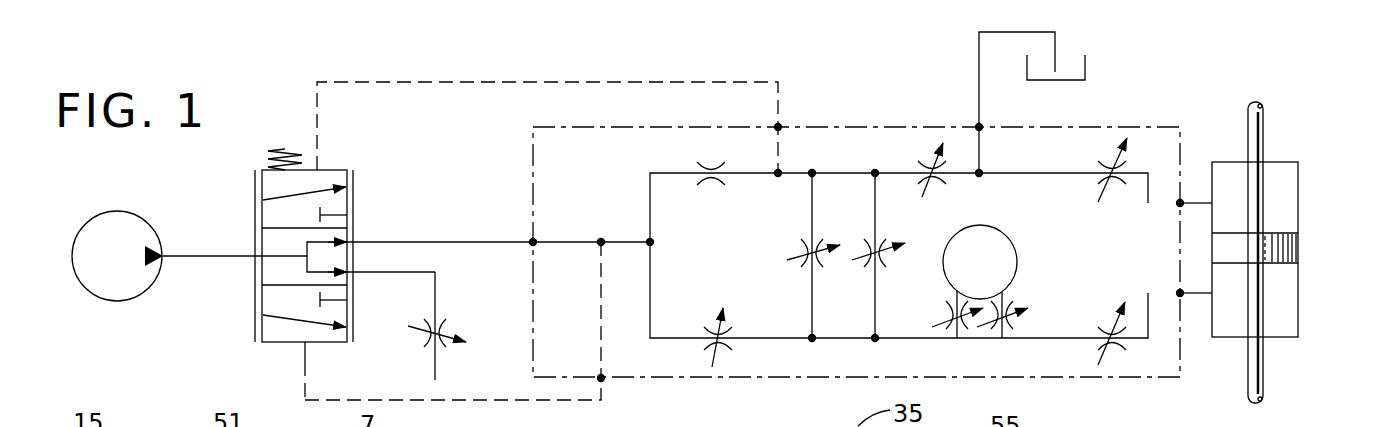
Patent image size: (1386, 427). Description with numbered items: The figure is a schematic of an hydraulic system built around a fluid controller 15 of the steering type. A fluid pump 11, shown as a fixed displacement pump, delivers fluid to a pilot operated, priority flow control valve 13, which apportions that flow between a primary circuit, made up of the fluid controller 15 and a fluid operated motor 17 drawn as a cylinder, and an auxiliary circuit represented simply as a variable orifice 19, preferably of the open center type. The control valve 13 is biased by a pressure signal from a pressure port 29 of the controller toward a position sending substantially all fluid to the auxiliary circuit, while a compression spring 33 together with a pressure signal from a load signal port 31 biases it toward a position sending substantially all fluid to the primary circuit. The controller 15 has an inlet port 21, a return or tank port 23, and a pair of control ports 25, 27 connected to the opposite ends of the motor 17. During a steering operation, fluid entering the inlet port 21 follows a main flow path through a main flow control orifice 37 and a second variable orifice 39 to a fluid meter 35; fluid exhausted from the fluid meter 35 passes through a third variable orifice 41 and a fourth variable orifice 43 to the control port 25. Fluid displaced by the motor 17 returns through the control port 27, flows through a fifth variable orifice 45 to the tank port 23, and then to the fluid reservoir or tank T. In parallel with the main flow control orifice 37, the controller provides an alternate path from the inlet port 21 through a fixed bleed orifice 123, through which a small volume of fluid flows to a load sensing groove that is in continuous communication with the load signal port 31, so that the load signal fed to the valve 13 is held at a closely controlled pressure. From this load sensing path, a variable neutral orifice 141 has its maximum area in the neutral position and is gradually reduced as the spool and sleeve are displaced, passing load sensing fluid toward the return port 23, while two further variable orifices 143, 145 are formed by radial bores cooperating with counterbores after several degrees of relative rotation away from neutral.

The fluid pump 11 is at (80, 220).
The priority flow control valve 13 is at (252, 309).
The compression spring 33 is at (295, 150).
The fluid controller 15 is at (511, 214).
The variable orifice 19 is at (449, 316).
The inlet port 21 is at (532, 244).
The pressure port 29 is at (603, 380).
The load signal port 31 is at (781, 126).
The return (tank) port 23 is at (977, 125).
The tank T is at (1085, 67).
The fixed bleed orifice 123 is at (708, 158).
The variable neutral orifice 141 is at (934, 189).
The variable orifice 143 is at (796, 251).
The variable orifice 145 is at (862, 251).
The fifth variable orifice 45 is at (1089, 181).
The main flow control orifice 37 is at (702, 330).
The second variable orifice 39 is at (935, 327).
The third variable orifice 41 is at (1013, 305).
The fourth variable orifice 43 is at (1088, 326).
The fluid meter 35 is at (996, 265).
The control (cylinder) port 27 is at (1179, 204).
The control (cylinder) port 25 is at (1179, 293).
The fluid operated motor 17 is at (1314, 207).